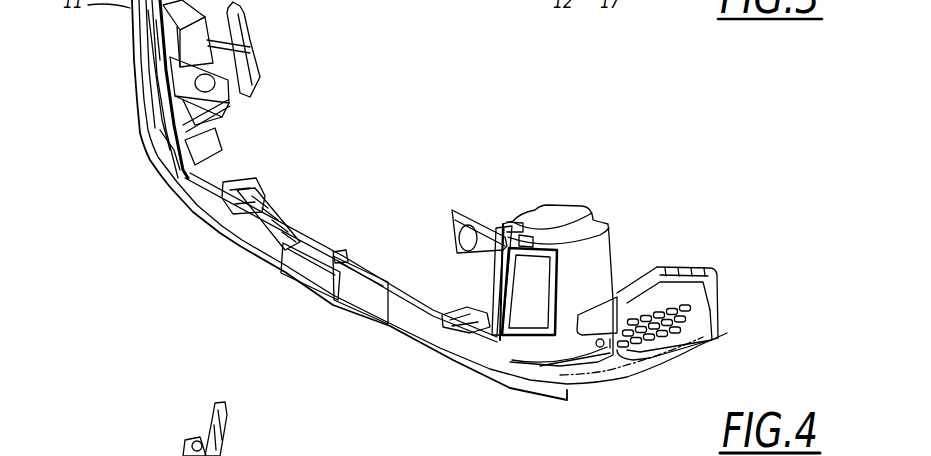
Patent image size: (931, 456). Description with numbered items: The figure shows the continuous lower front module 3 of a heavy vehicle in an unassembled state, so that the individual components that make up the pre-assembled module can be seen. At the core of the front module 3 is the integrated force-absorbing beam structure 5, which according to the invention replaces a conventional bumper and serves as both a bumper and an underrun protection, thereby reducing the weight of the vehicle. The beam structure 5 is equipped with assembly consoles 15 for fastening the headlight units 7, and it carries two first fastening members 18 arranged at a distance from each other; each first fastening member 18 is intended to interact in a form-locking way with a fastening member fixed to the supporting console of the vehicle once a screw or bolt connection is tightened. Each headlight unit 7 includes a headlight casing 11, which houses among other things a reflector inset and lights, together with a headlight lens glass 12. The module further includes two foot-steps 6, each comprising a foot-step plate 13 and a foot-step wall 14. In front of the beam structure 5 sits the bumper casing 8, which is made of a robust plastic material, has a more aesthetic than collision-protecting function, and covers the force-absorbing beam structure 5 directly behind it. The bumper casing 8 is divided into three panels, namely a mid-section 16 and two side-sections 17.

The continuous lower front module 3 is at (245, 259).
The force-absorbing beam structure 5 is at (275, 222).
The foot-step 6 is at (268, 63).
The headlight unit 7 is at (148, 93).
The bumper casing 8 is at (300, 268).
The headlight casing 11 is at (597, 262).
The headlight lens glass 12 is at (157, 110).
The foot-step plate 13 is at (673, 333).
The foot-step wall 14 is at (247, 17).
The assembly console 15 is at (200, 428).
The mid-section 16 is at (410, 332).
The side-section 17 is at (165, 180).
The first fastening member 18 is at (250, 172).